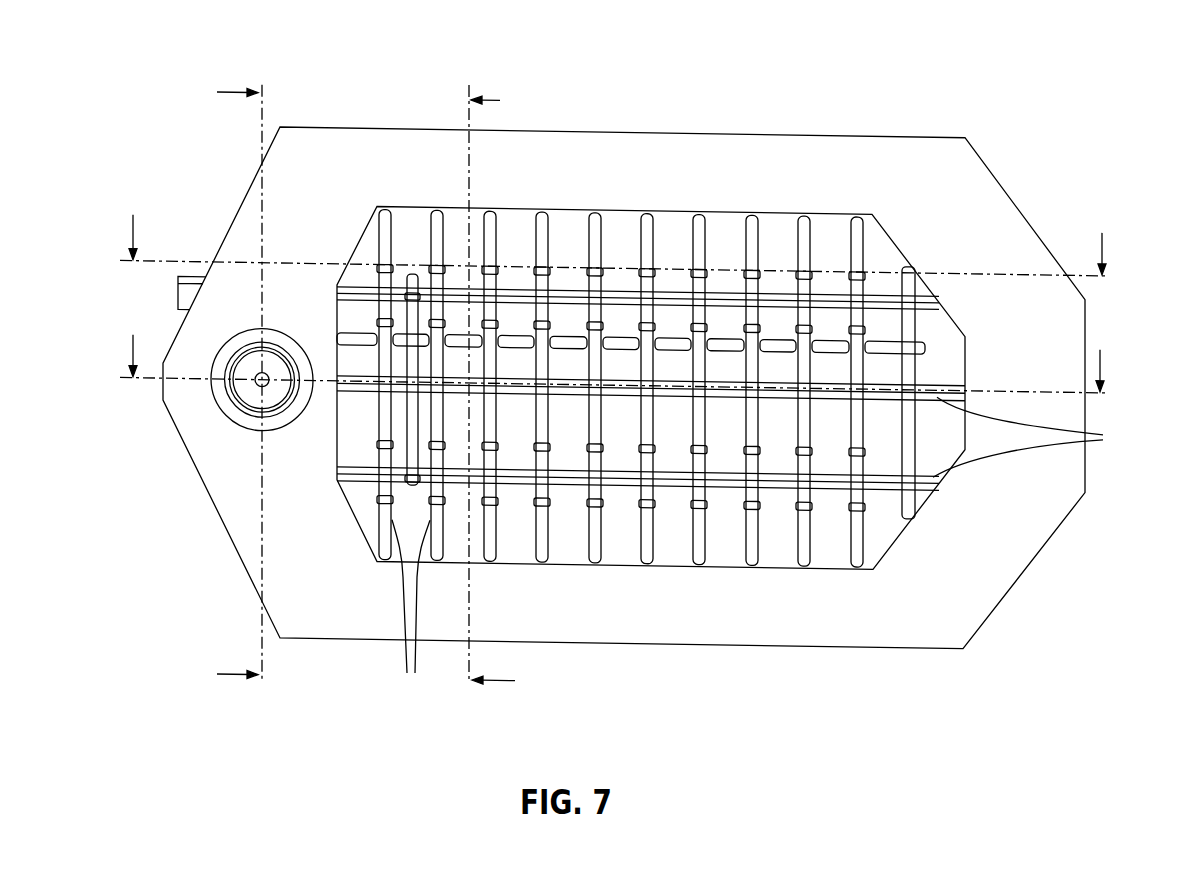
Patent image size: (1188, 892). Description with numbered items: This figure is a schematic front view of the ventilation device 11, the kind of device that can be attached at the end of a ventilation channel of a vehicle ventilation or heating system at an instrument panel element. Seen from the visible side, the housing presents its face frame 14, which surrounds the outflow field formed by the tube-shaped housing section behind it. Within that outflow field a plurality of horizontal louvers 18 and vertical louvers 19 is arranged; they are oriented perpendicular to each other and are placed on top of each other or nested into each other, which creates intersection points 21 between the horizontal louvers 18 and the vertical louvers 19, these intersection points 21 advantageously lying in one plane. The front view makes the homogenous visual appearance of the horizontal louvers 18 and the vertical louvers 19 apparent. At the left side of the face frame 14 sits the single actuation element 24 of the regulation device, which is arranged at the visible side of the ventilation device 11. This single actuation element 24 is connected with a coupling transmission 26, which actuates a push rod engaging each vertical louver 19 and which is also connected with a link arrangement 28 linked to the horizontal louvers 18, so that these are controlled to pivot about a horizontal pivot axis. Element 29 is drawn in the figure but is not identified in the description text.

The ventilation device 11 is at (619, 392).
The face frame 14 is at (935, 172).
The horizontal louvers 18 is at (1033, 438).
The vertical louvers 19 is at (411, 610).
The intersection points 21 is at (848, 294).
The single actuation element 24 is at (247, 392).
The coupling transmission 26 is at (189, 272).
The link arrangement 28 is at (418, 312).
The spacer fins 29 is at (670, 342).